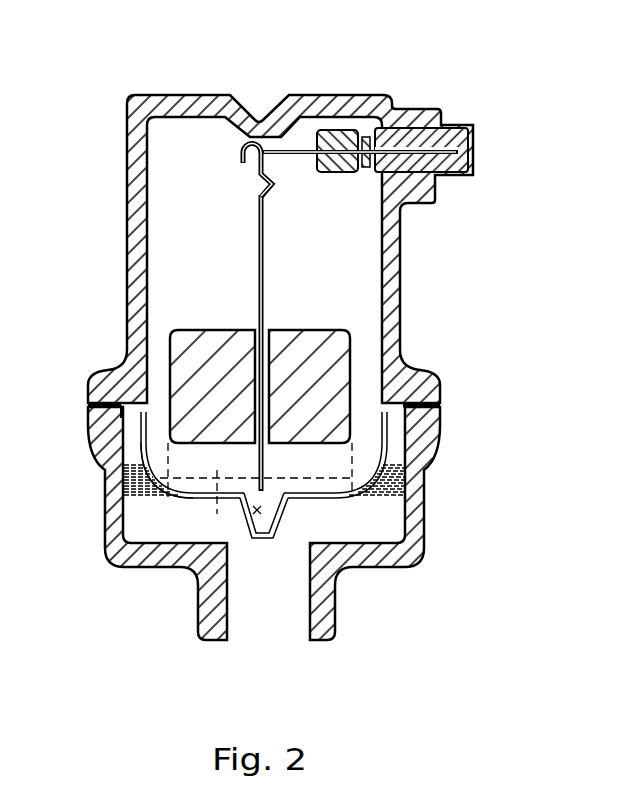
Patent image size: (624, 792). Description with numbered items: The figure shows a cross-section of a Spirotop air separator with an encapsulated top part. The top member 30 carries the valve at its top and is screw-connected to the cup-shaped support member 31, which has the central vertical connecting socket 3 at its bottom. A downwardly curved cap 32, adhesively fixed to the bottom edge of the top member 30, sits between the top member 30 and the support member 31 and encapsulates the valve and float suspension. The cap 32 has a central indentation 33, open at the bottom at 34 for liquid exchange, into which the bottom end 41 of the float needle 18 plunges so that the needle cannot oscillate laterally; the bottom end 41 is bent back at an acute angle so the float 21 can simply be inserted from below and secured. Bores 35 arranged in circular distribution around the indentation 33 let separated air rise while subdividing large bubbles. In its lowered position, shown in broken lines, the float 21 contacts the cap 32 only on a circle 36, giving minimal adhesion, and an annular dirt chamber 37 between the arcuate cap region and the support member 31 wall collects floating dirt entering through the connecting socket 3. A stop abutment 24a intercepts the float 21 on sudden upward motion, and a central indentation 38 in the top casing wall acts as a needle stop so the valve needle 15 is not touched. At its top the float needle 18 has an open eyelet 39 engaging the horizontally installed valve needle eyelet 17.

The connecting socket 3 is at (335, 623).
The valve needle 15 is at (303, 141).
The valve needle eyelet 17 is at (271, 144).
The float needle 18 is at (258, 278).
The float 21 is at (187, 342).
The stop abutment 24a is at (260, 199).
The top member 30 is at (152, 103).
The support member 31 is at (415, 557).
The cap 32 is at (388, 480).
The central indentation 33 is at (198, 585).
The liquid exchange opening 34 is at (257, 536).
The bores 35 is at (205, 487).
The circle 36 is at (195, 496).
The dirt chamber 37 is at (123, 479).
The central indentation 38 is at (232, 96).
The open eyelet 39 is at (243, 158).
The bottom end 41 is at (247, 496).